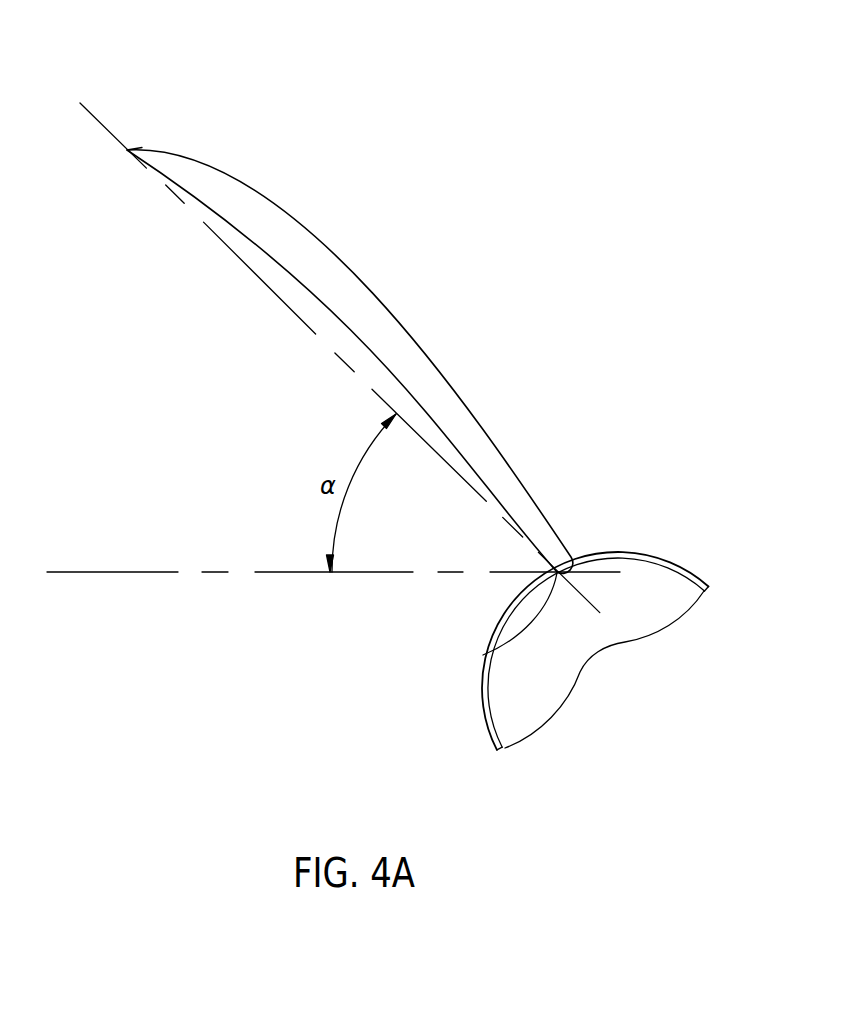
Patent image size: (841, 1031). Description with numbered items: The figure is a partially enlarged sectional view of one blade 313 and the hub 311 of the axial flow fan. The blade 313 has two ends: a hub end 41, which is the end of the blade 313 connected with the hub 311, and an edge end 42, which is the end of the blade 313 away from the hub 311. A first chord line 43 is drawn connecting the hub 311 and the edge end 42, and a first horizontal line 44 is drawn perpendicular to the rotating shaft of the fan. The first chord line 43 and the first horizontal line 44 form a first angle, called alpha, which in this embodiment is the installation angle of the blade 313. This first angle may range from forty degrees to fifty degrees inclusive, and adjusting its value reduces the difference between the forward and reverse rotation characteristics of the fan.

The hub end 41 is at (483, 655).
The edge end 42 is at (127, 150).
The first chord line 43 is at (90, 110).
The first horizontal line 44 is at (75, 572).
The hub 311 is at (686, 567).
The blade 313 is at (333, 255).